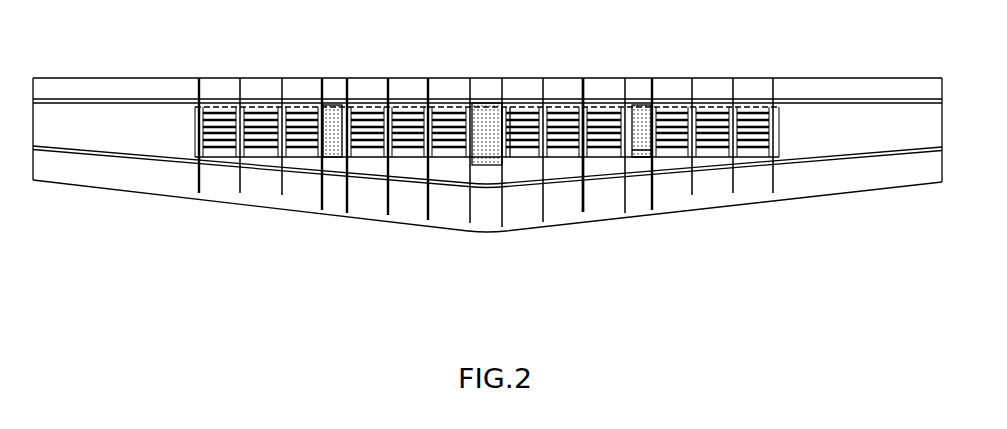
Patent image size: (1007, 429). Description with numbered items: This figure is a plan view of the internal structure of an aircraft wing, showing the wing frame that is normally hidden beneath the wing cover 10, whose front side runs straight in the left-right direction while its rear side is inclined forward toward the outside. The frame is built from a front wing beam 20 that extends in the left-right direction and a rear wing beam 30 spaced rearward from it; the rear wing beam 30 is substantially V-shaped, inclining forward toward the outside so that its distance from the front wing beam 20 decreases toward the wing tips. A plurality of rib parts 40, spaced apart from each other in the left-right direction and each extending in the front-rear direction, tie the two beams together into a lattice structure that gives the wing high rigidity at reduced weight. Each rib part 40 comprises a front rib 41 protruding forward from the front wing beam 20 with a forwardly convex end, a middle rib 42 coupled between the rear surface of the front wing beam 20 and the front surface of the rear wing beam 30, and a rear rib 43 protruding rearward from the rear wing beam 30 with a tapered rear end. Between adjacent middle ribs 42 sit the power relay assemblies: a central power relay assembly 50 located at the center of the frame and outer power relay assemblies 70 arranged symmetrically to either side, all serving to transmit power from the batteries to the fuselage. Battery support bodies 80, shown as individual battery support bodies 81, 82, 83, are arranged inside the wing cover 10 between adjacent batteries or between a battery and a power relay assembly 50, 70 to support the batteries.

The wing cover 10 is at (560, 88).
The front wing beam 20 is at (367, 100).
The rear wing beam 30 is at (258, 168).
The rib part 40 is at (406, 198).
The front rib 41 is at (428, 86).
The middle rib 42 is at (431, 166).
The rear rib 43 is at (444, 238).
The central power relay assembly 50 is at (486, 104).
The outer power relay assembly 70 is at (325, 105).
The battery support body 80 is at (579, 198).
The battery support body 81 is at (508, 143).
The battery support body 82 is at (583, 142).
The battery support body 83 is at (633, 157).